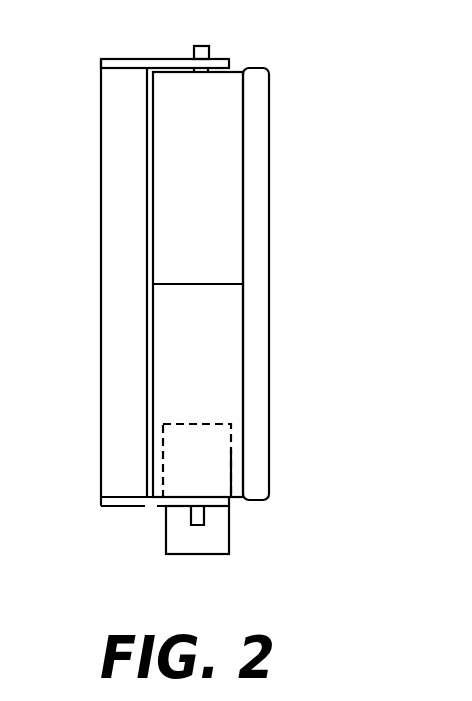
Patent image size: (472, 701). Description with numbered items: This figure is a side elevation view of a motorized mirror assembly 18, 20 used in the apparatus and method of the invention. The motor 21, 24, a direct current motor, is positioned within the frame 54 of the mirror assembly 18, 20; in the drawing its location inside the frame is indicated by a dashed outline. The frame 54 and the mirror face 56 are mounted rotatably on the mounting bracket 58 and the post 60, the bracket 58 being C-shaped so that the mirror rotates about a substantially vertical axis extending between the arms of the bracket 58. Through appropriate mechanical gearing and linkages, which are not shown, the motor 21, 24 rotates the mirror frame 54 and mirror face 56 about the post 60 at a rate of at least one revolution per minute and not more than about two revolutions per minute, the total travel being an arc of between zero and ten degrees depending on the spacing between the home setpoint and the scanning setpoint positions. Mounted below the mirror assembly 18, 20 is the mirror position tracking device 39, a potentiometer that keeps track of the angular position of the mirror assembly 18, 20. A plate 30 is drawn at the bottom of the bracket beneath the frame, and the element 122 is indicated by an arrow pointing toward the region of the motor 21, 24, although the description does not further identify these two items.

The mirror assembly 18 is at (219, 299).
The mirror assembly 20 is at (219, 299).
The motor 21 is at (266, 455).
The motor 24 is at (231, 441).
The bottom plate 30 is at (112, 506).
The mirror position tracking device 39 is at (229, 530).
The frame 54 is at (269, 97).
The mirror face 56 is at (269, 147).
The mounting bracket 58 is at (101, 315).
The post 60 is at (209, 46).
The controller 122 is at (233, 461).